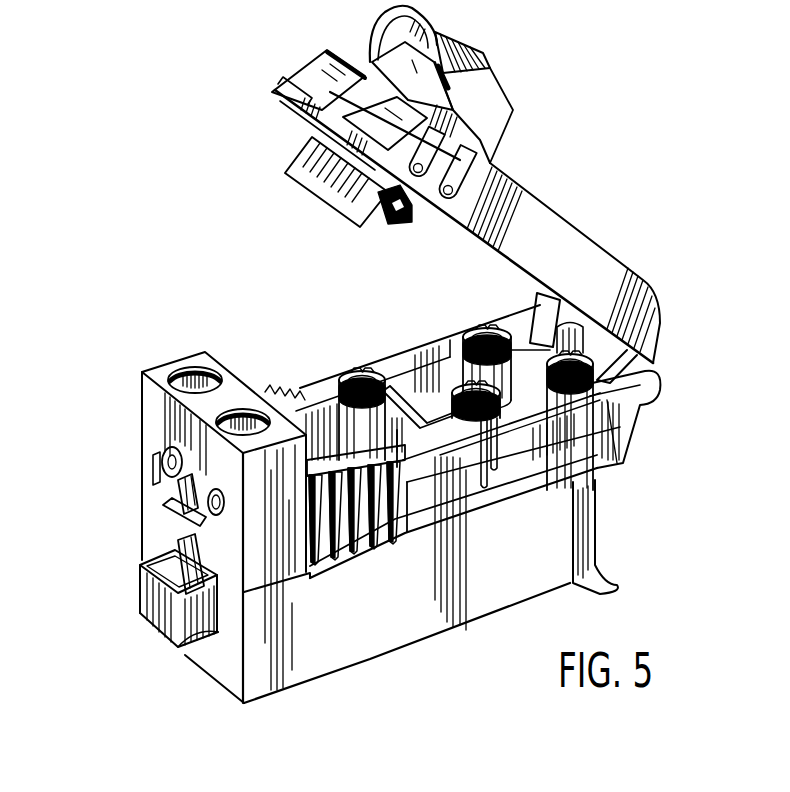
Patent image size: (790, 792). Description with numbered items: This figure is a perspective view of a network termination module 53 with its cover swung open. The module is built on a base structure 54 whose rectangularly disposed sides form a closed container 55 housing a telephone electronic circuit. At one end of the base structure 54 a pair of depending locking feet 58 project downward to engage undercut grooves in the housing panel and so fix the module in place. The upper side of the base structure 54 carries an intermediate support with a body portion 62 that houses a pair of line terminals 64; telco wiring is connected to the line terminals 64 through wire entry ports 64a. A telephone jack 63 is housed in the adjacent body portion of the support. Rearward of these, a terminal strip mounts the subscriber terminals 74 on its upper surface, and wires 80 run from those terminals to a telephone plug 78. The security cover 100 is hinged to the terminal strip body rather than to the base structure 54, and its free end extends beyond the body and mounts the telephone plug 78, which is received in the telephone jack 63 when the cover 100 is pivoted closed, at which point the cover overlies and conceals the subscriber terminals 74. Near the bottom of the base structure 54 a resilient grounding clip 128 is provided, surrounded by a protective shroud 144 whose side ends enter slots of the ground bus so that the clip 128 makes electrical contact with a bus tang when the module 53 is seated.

The network termination module 53 is at (624, 485).
The closed container 55 is at (420, 640).
The locking feet 58 is at (613, 592).
The body portion 62 is at (143, 420).
The line terminals 64 is at (190, 373).
The wire entry ports 64a is at (157, 476).
The base structure 54 is at (141, 513).
The grounding clip 128 is at (139, 580).
The protective shroud 144 is at (192, 642).
The telephone jack 63 is at (385, 465).
The subscriber terminals 74 is at (485, 326).
The wires 80 is at (490, 487).
The security cover 100 is at (600, 245).
The telephone plug 78 is at (332, 197).